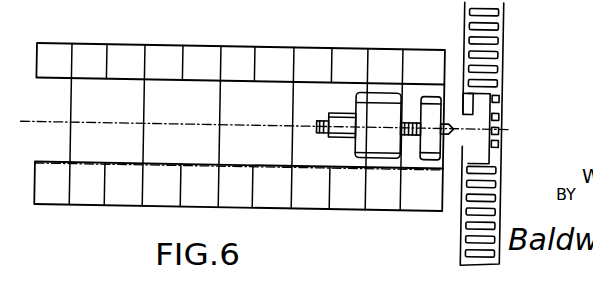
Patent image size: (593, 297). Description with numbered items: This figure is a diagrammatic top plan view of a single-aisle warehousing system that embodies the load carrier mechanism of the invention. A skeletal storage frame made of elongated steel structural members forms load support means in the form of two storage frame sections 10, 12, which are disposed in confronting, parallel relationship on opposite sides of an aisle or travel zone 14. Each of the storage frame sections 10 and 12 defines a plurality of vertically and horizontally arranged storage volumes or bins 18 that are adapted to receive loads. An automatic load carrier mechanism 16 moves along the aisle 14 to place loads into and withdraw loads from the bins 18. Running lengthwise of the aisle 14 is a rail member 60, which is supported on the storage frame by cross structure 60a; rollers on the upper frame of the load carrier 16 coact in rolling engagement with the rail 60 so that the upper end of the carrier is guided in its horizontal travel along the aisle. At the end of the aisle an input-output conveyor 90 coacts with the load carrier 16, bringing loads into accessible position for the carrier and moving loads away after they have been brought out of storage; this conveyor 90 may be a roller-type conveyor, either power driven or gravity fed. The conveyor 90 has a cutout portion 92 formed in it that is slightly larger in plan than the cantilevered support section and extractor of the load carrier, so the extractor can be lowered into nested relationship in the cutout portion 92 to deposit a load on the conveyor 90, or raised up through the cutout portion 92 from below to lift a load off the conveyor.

The storage frame section 10 is at (240, 47).
The storage frame section 12 is at (239, 161).
The aisle 14 is at (312, 96).
The load carrier mechanism 16 is at (378, 88).
The storage bin 18 is at (57, 52).
The rail member 60 is at (58, 123).
The cross structure 60a is at (145, 114).
The input-output conveyor 90 is at (515, 134).
The cutout portion 92 is at (480, 106).